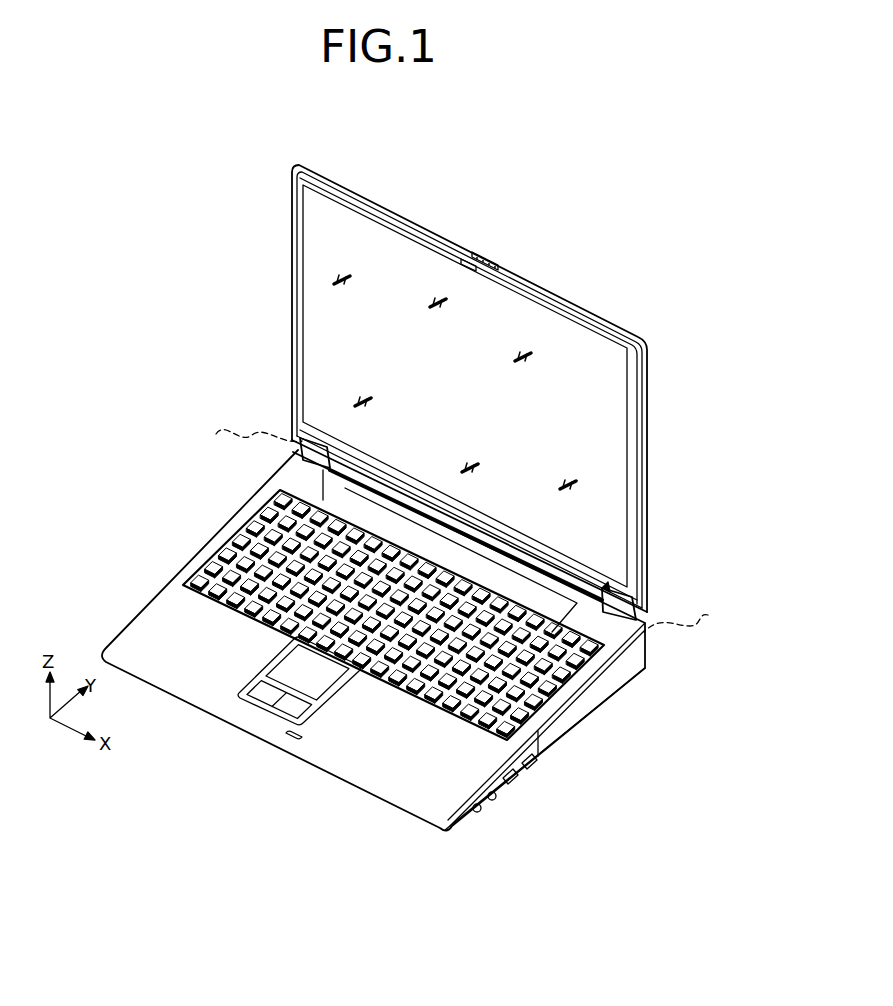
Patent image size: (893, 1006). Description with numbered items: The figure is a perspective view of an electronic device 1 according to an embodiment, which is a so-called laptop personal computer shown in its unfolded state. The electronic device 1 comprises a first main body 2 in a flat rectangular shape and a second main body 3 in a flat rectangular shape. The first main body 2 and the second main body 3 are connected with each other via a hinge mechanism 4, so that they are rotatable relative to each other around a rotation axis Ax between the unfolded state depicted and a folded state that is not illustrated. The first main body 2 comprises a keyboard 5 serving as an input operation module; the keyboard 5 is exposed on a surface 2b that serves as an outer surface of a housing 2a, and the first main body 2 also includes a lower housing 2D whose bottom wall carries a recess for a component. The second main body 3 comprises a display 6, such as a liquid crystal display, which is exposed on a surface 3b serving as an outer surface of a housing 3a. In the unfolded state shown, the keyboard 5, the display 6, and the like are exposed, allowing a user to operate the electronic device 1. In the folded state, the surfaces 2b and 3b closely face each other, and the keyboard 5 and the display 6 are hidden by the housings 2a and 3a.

The electronic device 1 is at (631, 240).
The first main body 2 is at (133, 599).
The housing 2a is at (373, 640).
The surface 2b is at (378, 760).
The lower housing 2D is at (565, 766).
The second main body 3 is at (312, 160).
The housing 3a is at (469, 388).
The surface 3b is at (650, 333).
The hinge mechanism 4 is at (295, 431).
The keyboard 5 is at (541, 717).
The display 6 is at (641, 424).
The rotation axis Ax is at (460, 529).